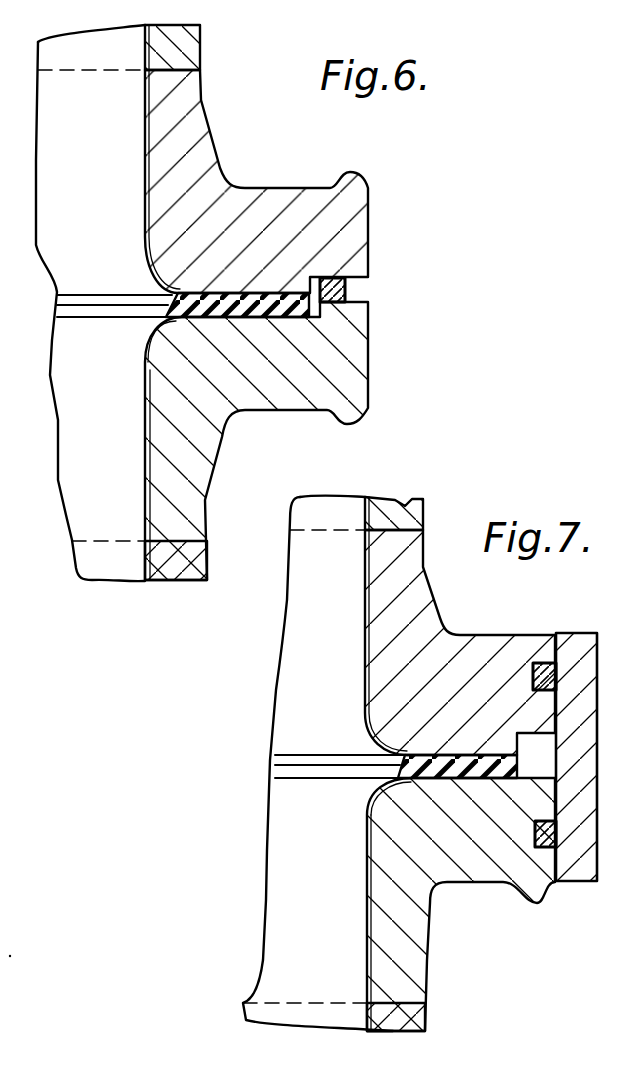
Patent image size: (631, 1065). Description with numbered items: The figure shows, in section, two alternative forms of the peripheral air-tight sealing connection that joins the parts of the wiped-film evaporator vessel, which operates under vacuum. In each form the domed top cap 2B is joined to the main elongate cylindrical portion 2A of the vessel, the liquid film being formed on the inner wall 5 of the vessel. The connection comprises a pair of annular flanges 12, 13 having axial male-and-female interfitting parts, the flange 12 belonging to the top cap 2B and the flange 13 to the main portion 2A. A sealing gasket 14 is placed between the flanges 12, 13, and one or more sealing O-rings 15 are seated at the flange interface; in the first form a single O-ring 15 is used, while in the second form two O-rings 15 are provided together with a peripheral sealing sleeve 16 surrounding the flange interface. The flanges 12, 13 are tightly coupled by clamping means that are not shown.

In FIG. 6, the main elongate cylindrical portion 2A is at (173, 568).
In FIG. 7, the main elongate cylindrical portion 2A is at (413, 1018).
In FIG. 6, the domed top cap 2B is at (192, 53).
In FIG. 7, the domed top cap 2B is at (425, 506).
In FIG. 6, the inner wall 5 is at (140, 108).
In FIG. 7, the inner wall 5 is at (363, 870).
In FIG. 6, the annular flange 12 is at (273, 205).
In FIG. 7, the annular flange 12 is at (473, 657).
In FIG. 6, the annular flange 13 is at (265, 372).
In FIG. 7, the annular flange 13 is at (493, 833).
In FIG. 6, the sealing gasket 14 is at (277, 292).
In FIG. 7, the sealing gasket 14 is at (432, 768).
In FIG. 6, the sealing O-ring 15 is at (345, 297).
In FIG. 7, the sealing O-ring 15 is at (537, 665).
In FIG. 7, the peripheral sealing sleeve 16 is at (597, 640).